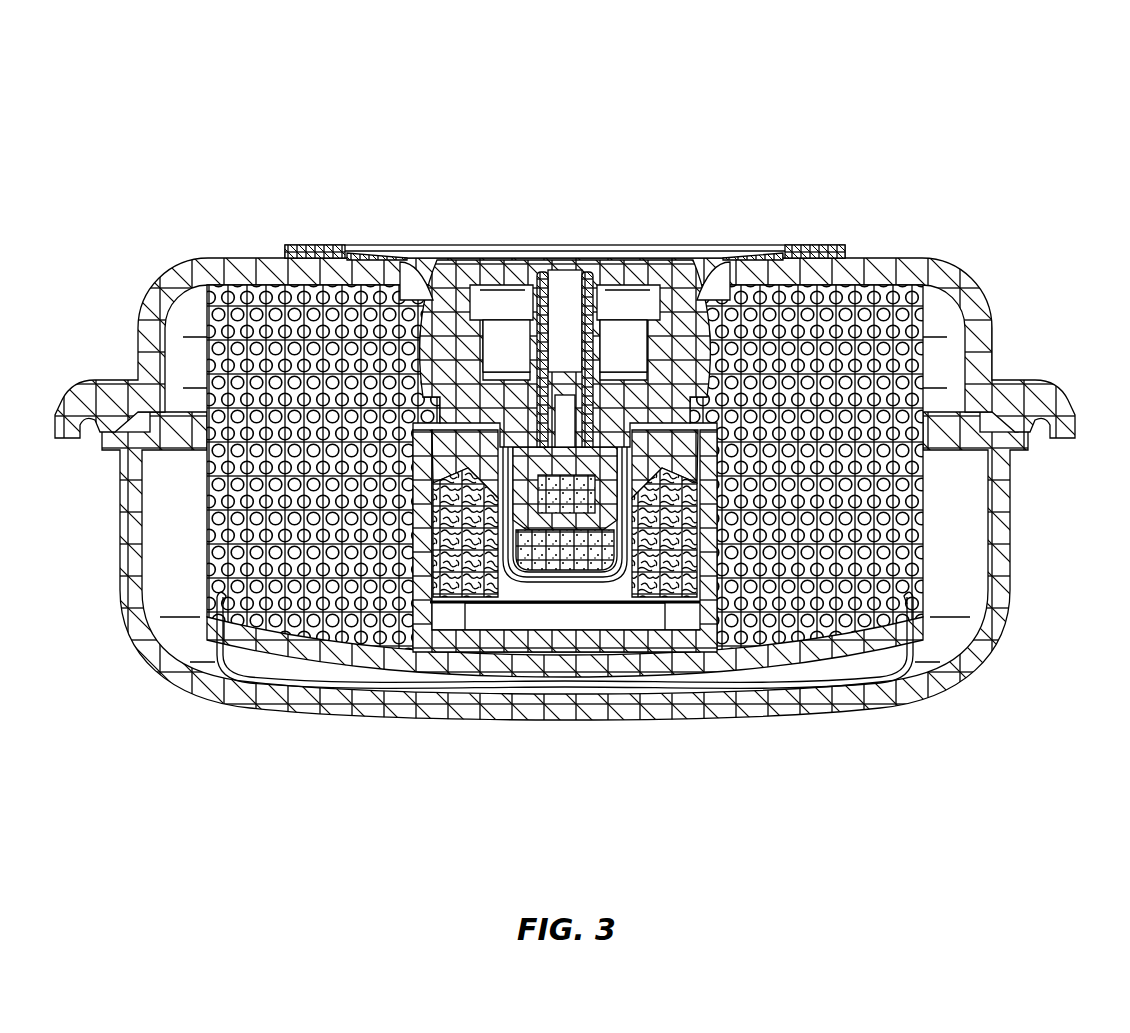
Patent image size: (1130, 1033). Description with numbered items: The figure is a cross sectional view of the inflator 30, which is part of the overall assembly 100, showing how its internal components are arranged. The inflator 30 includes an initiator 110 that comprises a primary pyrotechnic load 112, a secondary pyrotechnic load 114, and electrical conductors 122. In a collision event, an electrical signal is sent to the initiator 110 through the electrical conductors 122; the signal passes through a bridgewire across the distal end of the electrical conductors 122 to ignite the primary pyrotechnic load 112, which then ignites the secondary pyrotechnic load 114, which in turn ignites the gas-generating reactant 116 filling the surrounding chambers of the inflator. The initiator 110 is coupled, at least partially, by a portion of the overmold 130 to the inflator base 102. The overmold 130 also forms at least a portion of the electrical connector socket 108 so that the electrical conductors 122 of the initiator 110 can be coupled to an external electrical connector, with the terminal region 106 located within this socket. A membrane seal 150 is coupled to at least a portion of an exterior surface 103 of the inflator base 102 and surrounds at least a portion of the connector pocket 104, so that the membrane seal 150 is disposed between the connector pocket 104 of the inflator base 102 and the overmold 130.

The electronic device 100 is at (131, 98).
The inflator 30 is at (191, 206).
The inflator base 102 is at (175, 262).
The exterior surface 103 is at (892, 260).
The connector pocket 104 is at (449, 221).
The terminal 106 is at (528, 383).
The electrical connector socket 108 is at (628, 160).
The initiator 110 is at (498, 632).
The primary pyrotechnic load 112 is at (570, 502).
The secondary pyrotechnic load 114 is at (571, 558).
The gas-generating reactant 116 is at (347, 645).
The electrical conductors 122 is at (562, 335).
The overmold 130 is at (687, 260).
The membrane seal 150 is at (767, 260).